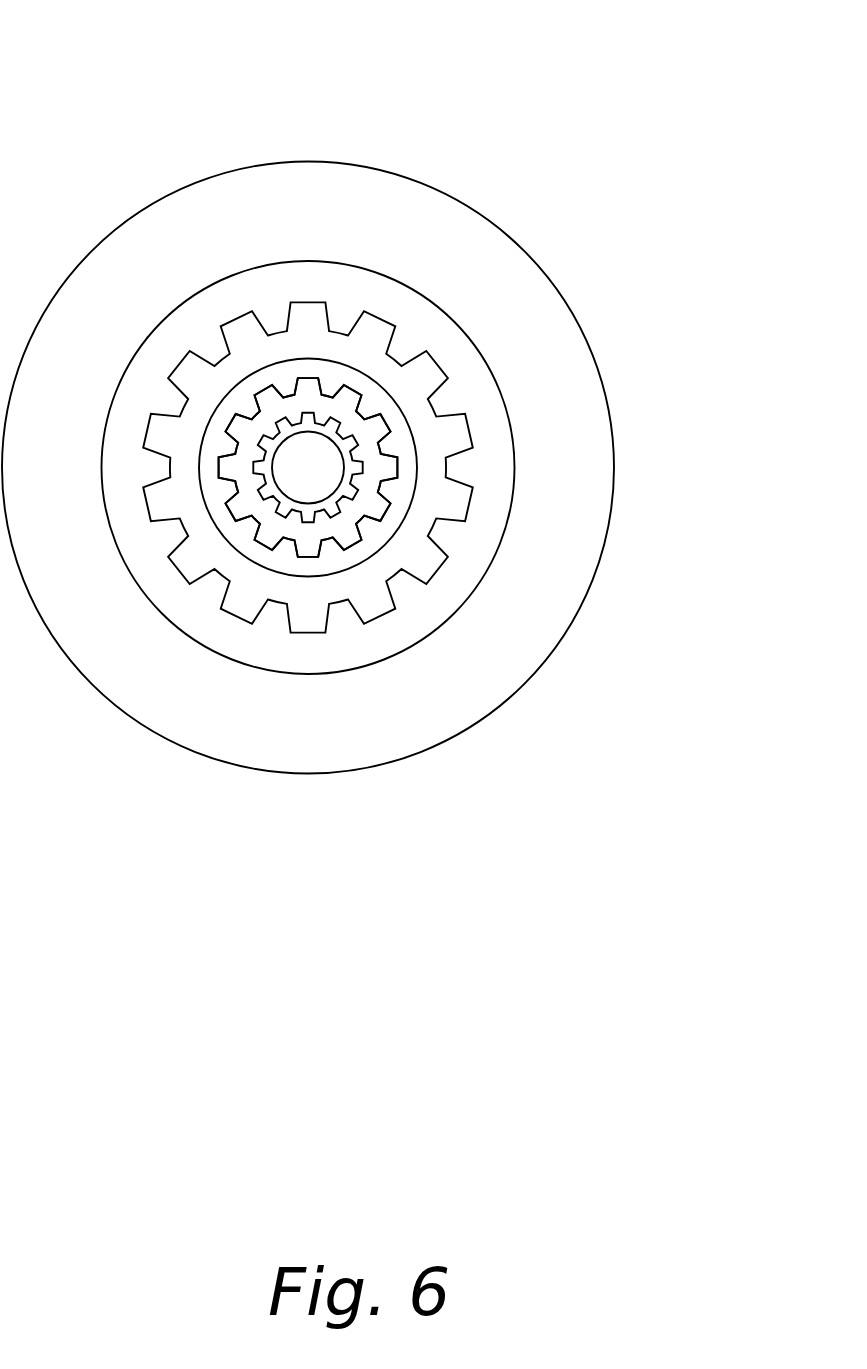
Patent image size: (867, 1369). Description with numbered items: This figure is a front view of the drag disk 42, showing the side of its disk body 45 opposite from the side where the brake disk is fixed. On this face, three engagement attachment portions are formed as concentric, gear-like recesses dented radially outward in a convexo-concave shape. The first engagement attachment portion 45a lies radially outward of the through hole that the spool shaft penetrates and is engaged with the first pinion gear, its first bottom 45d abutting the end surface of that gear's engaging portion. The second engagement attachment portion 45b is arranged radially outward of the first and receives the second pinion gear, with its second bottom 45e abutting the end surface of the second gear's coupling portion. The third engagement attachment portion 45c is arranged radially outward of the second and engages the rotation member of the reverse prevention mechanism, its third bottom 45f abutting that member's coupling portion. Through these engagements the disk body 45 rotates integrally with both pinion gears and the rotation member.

The drag disk 42 is at (565, 210).
The disk body 45 is at (297, 145).
The first engagement attachment portion 45a is at (310, 432).
The second engagement attachment portion 45b is at (387, 437).
The third engagement attachment portion 45c is at (436, 575).
The first bottom 45d is at (318, 510).
The second bottom 45e is at (282, 540).
The third bottom 45f is at (215, 543).